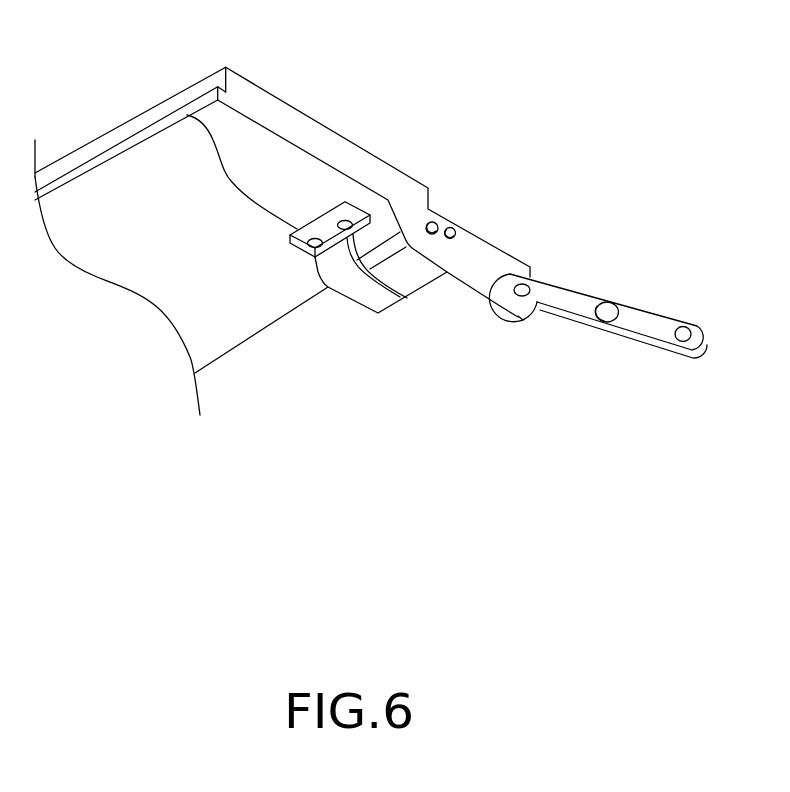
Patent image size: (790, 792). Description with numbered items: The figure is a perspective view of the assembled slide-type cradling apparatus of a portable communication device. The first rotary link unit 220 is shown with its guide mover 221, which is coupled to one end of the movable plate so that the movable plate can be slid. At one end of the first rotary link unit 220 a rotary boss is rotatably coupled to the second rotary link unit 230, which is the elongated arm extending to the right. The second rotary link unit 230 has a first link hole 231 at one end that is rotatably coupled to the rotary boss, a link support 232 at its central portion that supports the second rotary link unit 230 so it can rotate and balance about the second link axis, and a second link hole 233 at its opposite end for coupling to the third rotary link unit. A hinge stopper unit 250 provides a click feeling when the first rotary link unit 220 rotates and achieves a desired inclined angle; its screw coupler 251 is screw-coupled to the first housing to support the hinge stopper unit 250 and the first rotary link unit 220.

The first rotary link unit 220 is at (413, 278).
The guide mover 221 is at (320, 148).
The second rotary link unit 230 is at (600, 256).
The first link hole 231 is at (528, 287).
The link support 232 is at (607, 302).
The second link hole 233 is at (693, 281).
The hinge stopper unit 250 is at (363, 307).
The screw coupler 251 is at (320, 228).